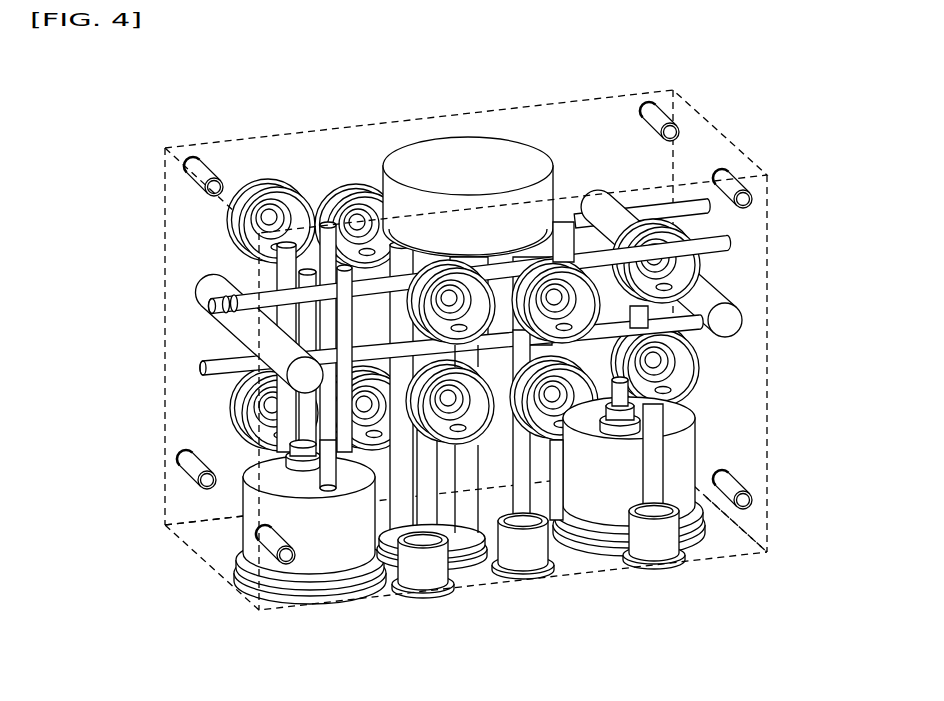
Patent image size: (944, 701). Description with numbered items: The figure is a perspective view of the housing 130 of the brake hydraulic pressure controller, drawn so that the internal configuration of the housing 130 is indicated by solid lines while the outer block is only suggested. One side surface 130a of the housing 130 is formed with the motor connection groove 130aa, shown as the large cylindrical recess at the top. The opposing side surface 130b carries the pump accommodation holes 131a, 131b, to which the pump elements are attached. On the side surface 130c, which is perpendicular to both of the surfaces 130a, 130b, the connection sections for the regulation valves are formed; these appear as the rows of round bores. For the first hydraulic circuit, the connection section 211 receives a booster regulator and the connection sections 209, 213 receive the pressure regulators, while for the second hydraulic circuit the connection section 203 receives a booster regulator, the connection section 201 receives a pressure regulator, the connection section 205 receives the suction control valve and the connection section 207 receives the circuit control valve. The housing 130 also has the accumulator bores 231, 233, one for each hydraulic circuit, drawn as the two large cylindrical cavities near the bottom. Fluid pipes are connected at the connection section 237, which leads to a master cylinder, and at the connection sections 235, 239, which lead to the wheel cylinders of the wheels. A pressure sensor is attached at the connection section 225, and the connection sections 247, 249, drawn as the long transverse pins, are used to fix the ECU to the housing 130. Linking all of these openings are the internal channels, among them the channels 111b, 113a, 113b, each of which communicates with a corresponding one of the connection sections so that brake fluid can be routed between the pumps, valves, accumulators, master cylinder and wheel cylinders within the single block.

The housing 130 is at (806, 127).
The side surface 130a is at (307, 152).
The side surface 130b is at (206, 547).
The side surface 130c is at (751, 424).
The motor connection groove 130aa is at (470, 165).
The internal channel 111b is at (357, 347).
The internal channel 113a is at (585, 300).
The internal channel 113b is at (645, 320).
The pump accommodation hole 131a is at (466, 552).
The pump accommodation hole 131b is at (582, 502).
The connection section 201 is at (681, 266).
The connection section 203 is at (679, 373).
The connection section 205 is at (567, 290).
The connection section 207 is at (543, 482).
The connection section 209 is at (450, 292).
The connection section 211 is at (462, 497).
The connection section 213 is at (264, 223).
The connection section 225 is at (252, 413).
The accumulator bore 231 is at (681, 460).
The accumulator bore 233 is at (258, 514).
The connection section 235 is at (655, 543).
The connection section 237 is at (525, 559).
The connection section 239 is at (425, 570).
The connection section 247 is at (722, 321).
The connection section 249 is at (244, 324).